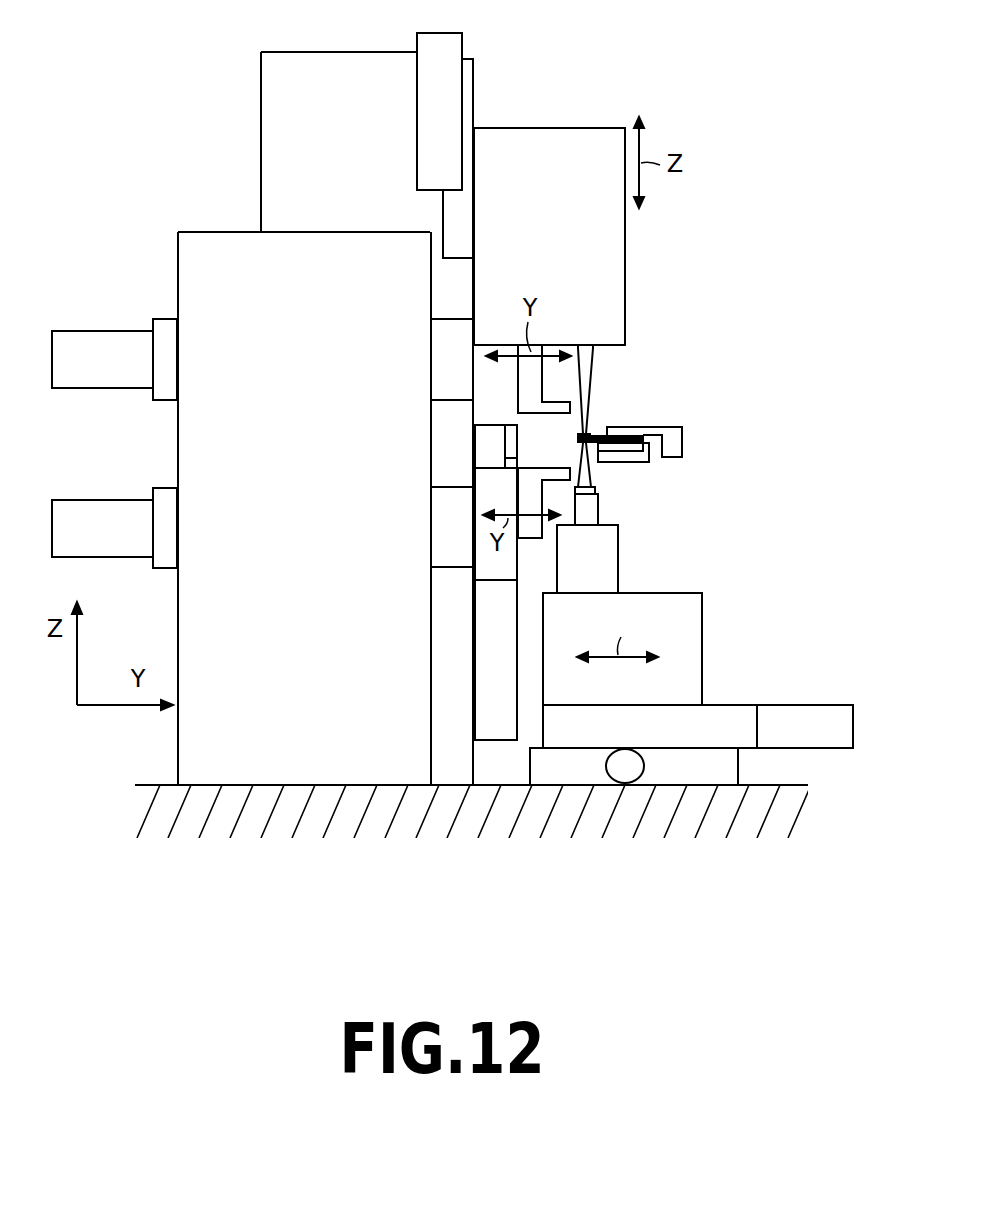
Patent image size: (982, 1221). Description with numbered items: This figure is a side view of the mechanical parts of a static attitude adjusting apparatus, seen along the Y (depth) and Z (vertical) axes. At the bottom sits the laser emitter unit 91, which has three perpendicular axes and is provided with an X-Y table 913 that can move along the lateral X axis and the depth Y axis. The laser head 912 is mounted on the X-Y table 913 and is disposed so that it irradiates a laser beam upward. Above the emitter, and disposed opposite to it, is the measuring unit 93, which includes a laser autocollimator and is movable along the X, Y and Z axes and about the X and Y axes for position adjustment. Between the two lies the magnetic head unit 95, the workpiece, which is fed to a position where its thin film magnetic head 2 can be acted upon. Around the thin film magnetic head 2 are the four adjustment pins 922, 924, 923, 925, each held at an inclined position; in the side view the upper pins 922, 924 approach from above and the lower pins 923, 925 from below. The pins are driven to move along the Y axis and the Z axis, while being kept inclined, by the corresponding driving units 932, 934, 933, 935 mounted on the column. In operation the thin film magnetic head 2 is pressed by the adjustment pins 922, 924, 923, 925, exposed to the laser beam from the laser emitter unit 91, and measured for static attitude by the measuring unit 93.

The thin film magnetic head 2 is at (589, 432).
The laser emitter unit 91 is at (710, 583).
The laser head 912 is at (594, 508).
The X-Y table 913 is at (737, 712).
The measuring unit 93 is at (566, 143).
The magnetic head unit 95 is at (607, 433).
The adjustment pin 922 is at (452, 415).
The adjustment pin 924 is at (583, 436).
The adjustment pin 923 is at (455, 468).
The adjustment pin 925 is at (581, 444).
The driving unit 932 is at (442, 379).
The driving unit 934 is at (552, 404).
The driving unit 933 is at (445, 503).
The driving unit 935 is at (560, 477).